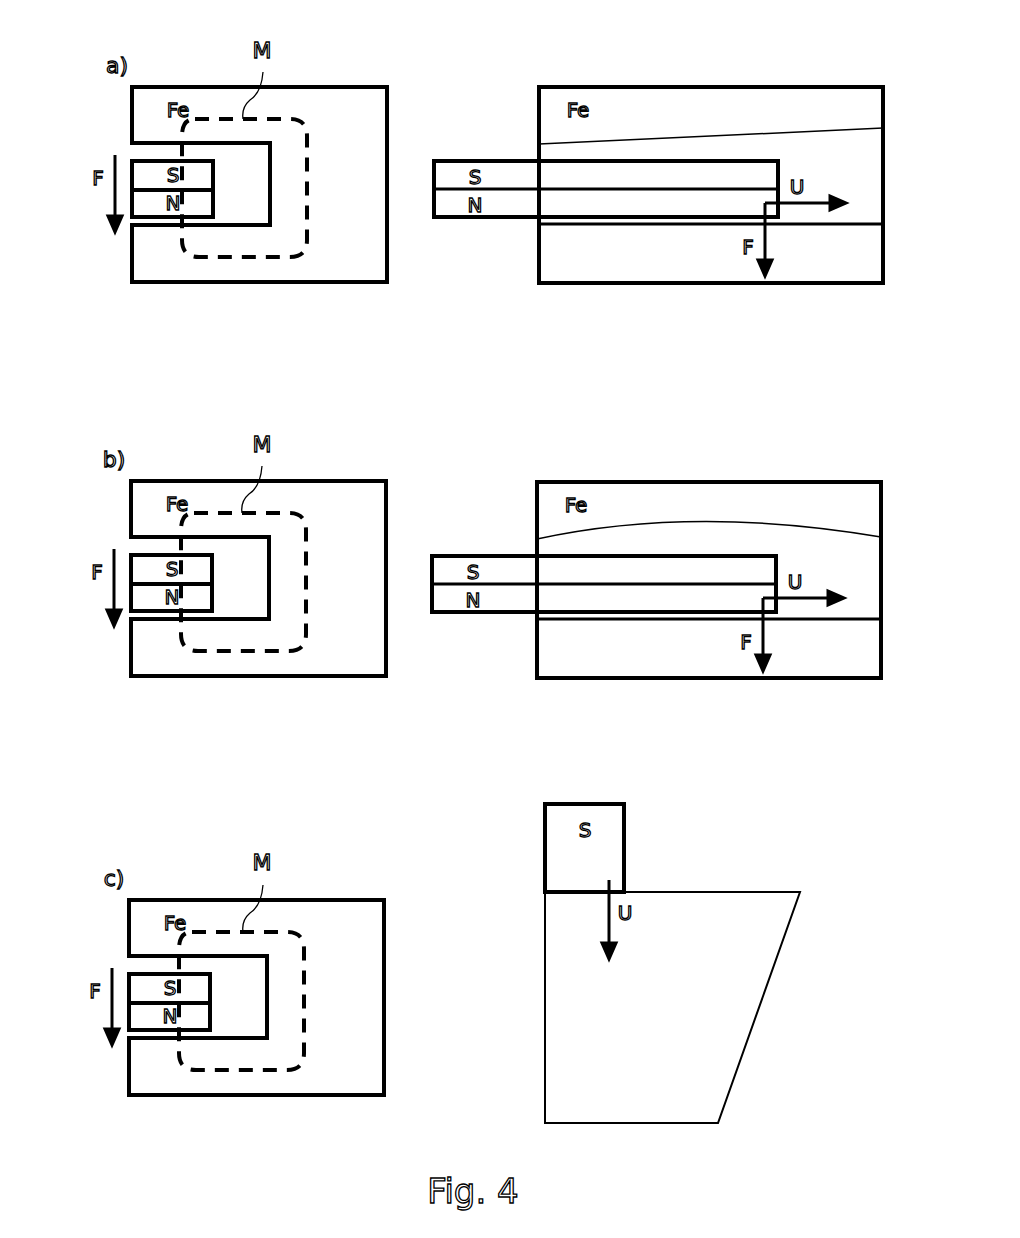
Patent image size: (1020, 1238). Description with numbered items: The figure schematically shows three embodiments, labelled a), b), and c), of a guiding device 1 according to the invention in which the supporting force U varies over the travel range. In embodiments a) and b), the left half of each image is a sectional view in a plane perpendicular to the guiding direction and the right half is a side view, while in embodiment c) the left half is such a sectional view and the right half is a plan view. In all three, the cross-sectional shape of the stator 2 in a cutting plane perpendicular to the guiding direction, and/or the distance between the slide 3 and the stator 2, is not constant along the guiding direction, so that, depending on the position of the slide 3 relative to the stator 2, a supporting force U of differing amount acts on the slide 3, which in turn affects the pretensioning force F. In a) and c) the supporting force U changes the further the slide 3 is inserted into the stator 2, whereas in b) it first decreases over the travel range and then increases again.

The guiding device 1 is at (132, 105).
The stator 2 is at (178, 84).
The slide 3 is at (130, 197).